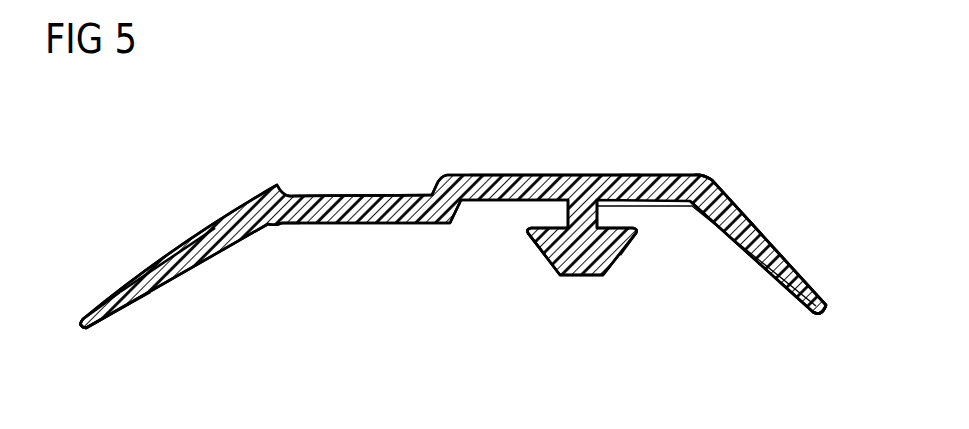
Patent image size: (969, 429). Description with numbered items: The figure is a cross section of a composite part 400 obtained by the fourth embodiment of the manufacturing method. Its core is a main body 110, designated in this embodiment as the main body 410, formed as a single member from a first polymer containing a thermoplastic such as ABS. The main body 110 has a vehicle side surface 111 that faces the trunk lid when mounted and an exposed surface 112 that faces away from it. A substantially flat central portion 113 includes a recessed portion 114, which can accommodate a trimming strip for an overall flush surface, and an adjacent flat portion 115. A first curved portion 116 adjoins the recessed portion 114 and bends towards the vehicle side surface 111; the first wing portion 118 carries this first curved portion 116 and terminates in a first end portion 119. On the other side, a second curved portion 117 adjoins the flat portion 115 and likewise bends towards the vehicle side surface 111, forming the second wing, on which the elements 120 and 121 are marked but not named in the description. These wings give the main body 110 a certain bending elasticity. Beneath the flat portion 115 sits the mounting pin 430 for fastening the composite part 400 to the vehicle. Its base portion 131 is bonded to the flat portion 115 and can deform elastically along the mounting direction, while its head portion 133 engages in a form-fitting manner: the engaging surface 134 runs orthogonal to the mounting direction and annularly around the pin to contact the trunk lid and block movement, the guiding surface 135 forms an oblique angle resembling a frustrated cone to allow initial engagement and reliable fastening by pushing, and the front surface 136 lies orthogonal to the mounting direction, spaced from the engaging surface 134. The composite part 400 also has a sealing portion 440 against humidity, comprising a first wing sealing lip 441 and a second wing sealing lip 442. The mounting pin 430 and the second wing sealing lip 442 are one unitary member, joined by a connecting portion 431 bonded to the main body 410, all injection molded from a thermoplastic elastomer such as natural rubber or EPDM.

The composite part 400 is at (396, 91).
The main body 110 is at (220, 228).
The first wing portion 118 is at (175, 255).
The first end portion 119 is at (110, 292).
The first wing sealing lip 441 is at (110, 320).
The vehicle side surface 111 is at (390, 225).
The recessed portion 114 is at (358, 195).
The first curved portion 116 is at (270, 215).
The exposed surface 112 is at (470, 172).
The main body 410 is at (497, 172).
The flat portion 115 is at (580, 172).
The central portion 113 is at (636, 168).
The second curved portion 117 is at (712, 182).
The second leg outer surface 120 is at (752, 220).
The second leg end portion 121 is at (790, 248).
The second wing sealing lip 442 is at (795, 305).
The connecting portion 431 is at (746, 272).
The mounting pin 430 is at (606, 286).
The base portion 131 is at (598, 208).
The head portion 133 is at (580, 278).
The engaging surface 134 is at (557, 218).
The guiding surface 135 is at (623, 257).
The front surface 136 is at (600, 278).
The sealing portion 440 is at (86, 340).